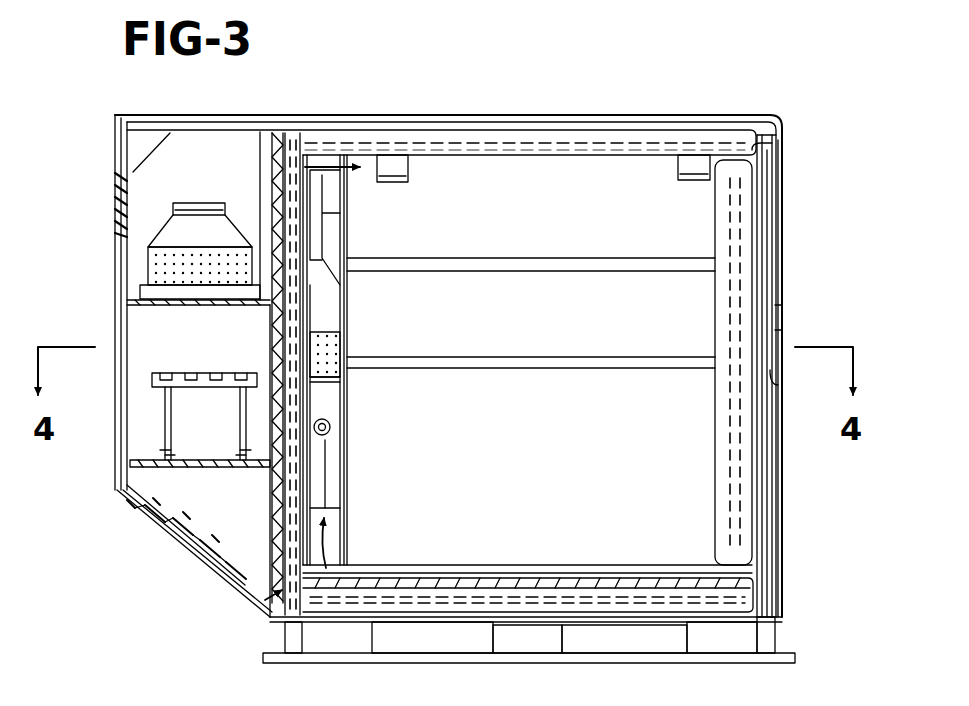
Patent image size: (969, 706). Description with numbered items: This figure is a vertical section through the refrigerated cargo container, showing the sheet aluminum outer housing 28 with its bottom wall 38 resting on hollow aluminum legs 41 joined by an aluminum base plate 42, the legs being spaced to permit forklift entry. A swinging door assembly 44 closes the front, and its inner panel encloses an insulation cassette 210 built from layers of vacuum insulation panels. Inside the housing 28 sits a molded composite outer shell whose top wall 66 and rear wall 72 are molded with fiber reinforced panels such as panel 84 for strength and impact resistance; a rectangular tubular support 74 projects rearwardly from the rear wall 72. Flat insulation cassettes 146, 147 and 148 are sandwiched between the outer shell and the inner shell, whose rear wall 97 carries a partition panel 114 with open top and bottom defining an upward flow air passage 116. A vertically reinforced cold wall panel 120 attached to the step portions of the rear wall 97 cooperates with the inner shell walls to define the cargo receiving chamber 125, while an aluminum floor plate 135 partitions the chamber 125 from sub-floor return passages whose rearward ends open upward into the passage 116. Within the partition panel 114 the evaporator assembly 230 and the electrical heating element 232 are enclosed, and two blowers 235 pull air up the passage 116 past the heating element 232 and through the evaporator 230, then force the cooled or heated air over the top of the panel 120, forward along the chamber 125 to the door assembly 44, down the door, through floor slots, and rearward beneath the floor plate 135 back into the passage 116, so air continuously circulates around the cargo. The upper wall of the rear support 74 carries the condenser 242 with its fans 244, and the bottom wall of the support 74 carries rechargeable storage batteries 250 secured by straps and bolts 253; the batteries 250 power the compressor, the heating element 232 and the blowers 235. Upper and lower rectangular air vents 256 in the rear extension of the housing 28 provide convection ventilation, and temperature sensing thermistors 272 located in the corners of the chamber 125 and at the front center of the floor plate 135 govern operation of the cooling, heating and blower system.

The outer housing 28 is at (338, 118).
The bottom wall 38 is at (612, 625).
The legs 41 is at (510, 642).
The base plate 42 is at (663, 662).
The door assembly 44 is at (764, 246).
The top wall 66 is at (472, 128).
The rear wall 72 is at (270, 176).
The tubular support 74 is at (165, 300).
The fiber reinforced panel 84 is at (277, 147).
The rear wall 97 is at (312, 394).
The partition panel 114 is at (342, 302).
The upward flow air passage 116 is at (330, 477).
The flat panel 120 is at (347, 515).
The cargo receiving chamber 125 is at (575, 418).
The floor plate 135 is at (540, 566).
The insulation cassette 146 is at (570, 138).
The insulation cassette 147 is at (575, 596).
The insulation cassette 148 is at (268, 603).
The insulation cassette 210 is at (752, 512).
The evaporator assembly 230 is at (335, 353).
The heating element 232 is at (335, 426).
The blowers 235 is at (338, 233).
The condenser 242 is at (150, 262).
The fans 244 is at (175, 209).
The storage batteries 250 is at (212, 433).
The bolts 253 is at (240, 412).
The air vents 256 is at (117, 185).
The thermistors 272 is at (393, 165).